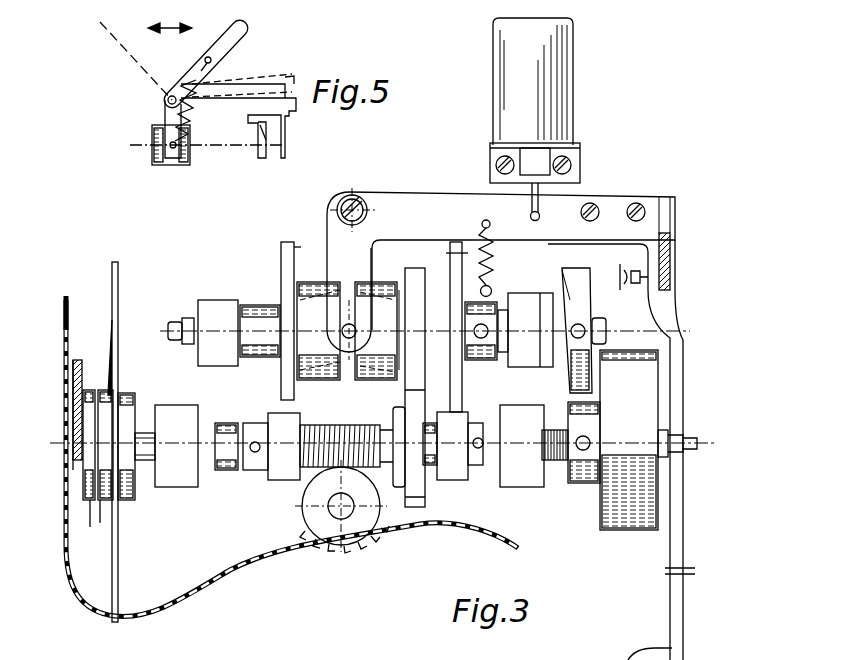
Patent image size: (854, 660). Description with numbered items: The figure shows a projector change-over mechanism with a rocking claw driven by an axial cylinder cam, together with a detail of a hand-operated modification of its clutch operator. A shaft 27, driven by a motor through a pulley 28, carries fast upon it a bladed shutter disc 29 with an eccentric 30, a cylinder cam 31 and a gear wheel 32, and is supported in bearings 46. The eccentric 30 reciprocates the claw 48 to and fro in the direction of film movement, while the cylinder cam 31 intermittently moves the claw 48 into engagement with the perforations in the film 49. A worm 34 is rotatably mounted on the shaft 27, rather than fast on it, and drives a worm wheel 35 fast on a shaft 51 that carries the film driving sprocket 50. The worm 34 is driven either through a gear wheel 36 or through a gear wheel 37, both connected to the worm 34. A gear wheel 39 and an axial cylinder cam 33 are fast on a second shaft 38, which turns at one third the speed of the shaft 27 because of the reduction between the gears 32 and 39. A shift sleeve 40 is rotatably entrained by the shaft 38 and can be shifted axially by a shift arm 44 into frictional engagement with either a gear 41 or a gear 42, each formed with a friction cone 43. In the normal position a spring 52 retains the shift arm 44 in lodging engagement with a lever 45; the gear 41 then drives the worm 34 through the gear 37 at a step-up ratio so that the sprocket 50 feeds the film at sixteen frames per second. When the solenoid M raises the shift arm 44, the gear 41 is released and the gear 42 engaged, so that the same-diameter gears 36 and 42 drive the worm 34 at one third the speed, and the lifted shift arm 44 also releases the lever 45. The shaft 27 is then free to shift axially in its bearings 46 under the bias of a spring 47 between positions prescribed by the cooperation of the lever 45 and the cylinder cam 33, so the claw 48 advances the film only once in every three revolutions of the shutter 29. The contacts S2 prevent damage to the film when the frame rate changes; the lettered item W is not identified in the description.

In FIG. 3, the shaft 27 is at (146, 462).
In FIG. 3, the pulley 28 is at (624, 512).
In FIG. 3, the bladed shutter disc 29 is at (122, 589).
In FIG. 3, the eccentric 30 is at (103, 458).
In FIG. 3, the cylinder cam 31 is at (114, 552).
In FIG. 3, the gear wheel 32 is at (452, 472).
In FIG. 5, the axial cylinder cam 33 is at (264, 150).
In FIG. 3, the axial cylinder cam 33 is at (577, 282).
In FIG. 3, the worm 34 is at (357, 425).
In FIG. 3, the worm wheel 35 is at (325, 488).
In FIG. 3, the gear wheel 36 is at (415, 508).
In FIG. 3, the gear wheel 37 is at (283, 430).
In FIG. 5, the second shaft 38 is at (218, 145).
In FIG. 3, the second shaft 38 is at (177, 322).
In FIG. 3, the gear wheel 39 is at (456, 393).
In FIG. 5, the shift sleeve 40 is at (156, 154).
In FIG. 3, the shift sleeve 40 is at (316, 380).
In FIG. 3, the gear 41 is at (283, 262).
In FIG. 3, the gear 42 is at (418, 282).
In FIG. 3, the friction cone 43 is at (385, 300).
In FIG. 5, the shift arm 44 is at (254, 100).
In FIG. 3, the shift arm 44 is at (398, 196).
In FIG. 3, the lever 45 is at (672, 606).
In FIG. 3, the bearings 46 is at (175, 412).
In FIG. 3, the spring 47 is at (553, 463).
In FIG. 3, the claw 48 is at (80, 385).
In FIG. 3, the film 49 is at (70, 308).
In FIG. 3, the film driving sprocket 50 is at (352, 550).
In FIG. 3, the shaft 51 is at (330, 511).
In FIG. 3, the spring 52 is at (494, 256).
In FIG. 3, the solenoid M is at (503, 73).
In FIG. 3, the web W is at (70, 417).
In FIG. 3, the contacts S2 is at (633, 286).